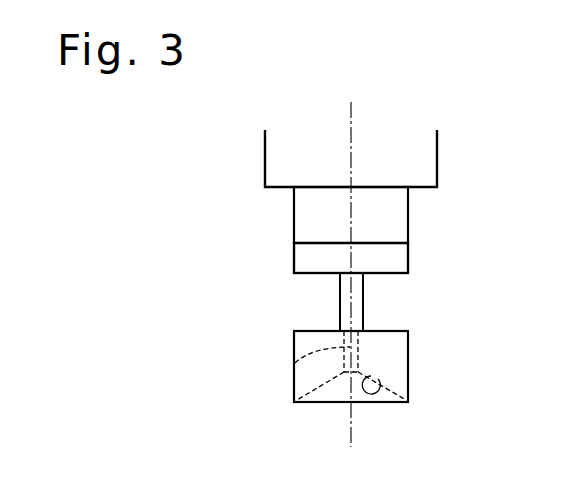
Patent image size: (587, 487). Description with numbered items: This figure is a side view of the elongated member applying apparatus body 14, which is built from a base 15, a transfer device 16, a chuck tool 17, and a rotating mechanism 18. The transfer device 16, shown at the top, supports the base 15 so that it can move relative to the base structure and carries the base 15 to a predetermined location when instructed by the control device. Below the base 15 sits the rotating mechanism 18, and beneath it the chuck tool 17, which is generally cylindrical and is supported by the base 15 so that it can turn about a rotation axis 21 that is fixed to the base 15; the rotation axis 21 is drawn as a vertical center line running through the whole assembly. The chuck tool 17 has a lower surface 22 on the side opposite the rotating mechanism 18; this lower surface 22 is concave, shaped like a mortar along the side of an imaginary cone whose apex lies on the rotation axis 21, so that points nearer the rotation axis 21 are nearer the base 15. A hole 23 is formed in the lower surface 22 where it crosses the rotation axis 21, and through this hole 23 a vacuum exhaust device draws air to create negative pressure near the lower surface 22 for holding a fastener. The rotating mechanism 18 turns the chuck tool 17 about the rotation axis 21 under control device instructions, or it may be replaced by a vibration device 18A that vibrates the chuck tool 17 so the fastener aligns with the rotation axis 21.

The elongated member applying apparatus body 14 is at (237, 158).
The base 15 is at (408, 218).
The transfer device 16 is at (437, 158).
The chuck tool 17 is at (408, 382).
The rotating mechanism 18 is at (408, 262).
The vibration device 18A is at (351, 258).
The rotation axis 21 is at (350, 430).
The lower surface 22 is at (371, 376).
The hole 23 is at (294, 365).